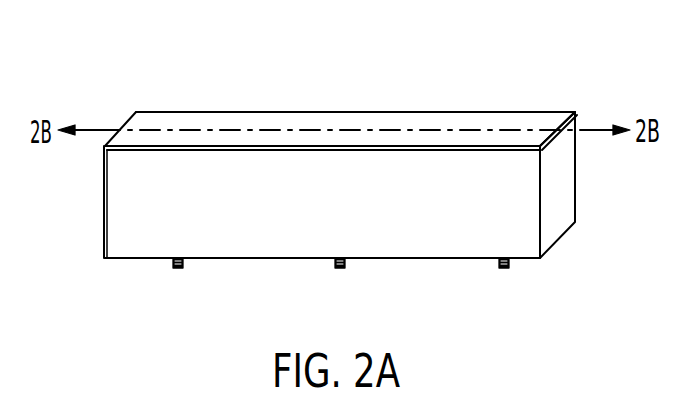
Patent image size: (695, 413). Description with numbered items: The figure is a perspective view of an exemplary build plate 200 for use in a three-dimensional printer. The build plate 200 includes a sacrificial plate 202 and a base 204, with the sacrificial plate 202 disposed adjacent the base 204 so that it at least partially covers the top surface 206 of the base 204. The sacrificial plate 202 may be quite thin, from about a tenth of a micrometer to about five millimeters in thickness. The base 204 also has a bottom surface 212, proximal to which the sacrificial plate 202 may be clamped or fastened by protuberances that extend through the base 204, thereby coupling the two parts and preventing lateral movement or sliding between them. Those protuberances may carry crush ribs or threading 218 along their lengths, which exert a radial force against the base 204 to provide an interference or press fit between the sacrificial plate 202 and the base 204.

The build plate 200 is at (366, 166).
The sacrificial plate 202 is at (543, 110).
The base 204 is at (577, 173).
The top surface 206 is at (468, 150).
The bottom surface 212 is at (240, 258).
The threading 218 is at (172, 263).